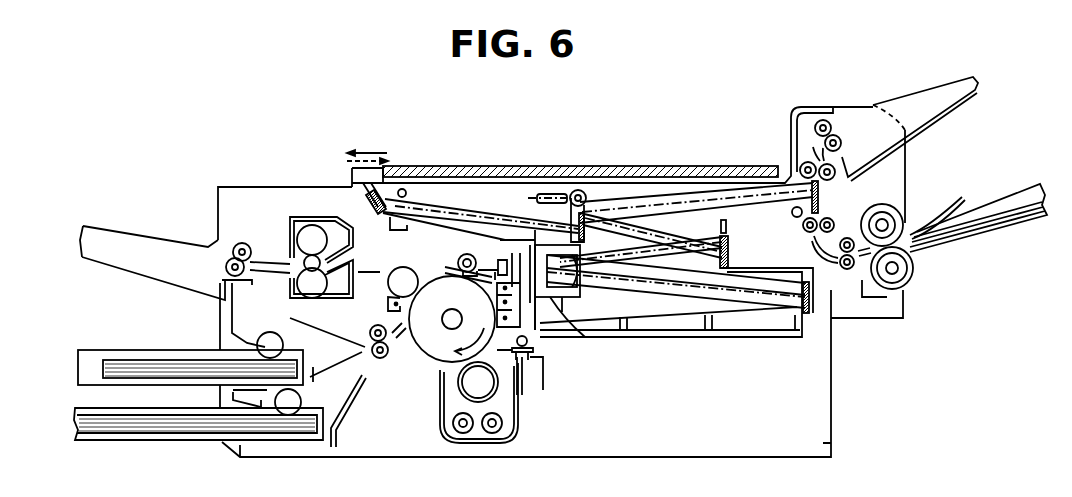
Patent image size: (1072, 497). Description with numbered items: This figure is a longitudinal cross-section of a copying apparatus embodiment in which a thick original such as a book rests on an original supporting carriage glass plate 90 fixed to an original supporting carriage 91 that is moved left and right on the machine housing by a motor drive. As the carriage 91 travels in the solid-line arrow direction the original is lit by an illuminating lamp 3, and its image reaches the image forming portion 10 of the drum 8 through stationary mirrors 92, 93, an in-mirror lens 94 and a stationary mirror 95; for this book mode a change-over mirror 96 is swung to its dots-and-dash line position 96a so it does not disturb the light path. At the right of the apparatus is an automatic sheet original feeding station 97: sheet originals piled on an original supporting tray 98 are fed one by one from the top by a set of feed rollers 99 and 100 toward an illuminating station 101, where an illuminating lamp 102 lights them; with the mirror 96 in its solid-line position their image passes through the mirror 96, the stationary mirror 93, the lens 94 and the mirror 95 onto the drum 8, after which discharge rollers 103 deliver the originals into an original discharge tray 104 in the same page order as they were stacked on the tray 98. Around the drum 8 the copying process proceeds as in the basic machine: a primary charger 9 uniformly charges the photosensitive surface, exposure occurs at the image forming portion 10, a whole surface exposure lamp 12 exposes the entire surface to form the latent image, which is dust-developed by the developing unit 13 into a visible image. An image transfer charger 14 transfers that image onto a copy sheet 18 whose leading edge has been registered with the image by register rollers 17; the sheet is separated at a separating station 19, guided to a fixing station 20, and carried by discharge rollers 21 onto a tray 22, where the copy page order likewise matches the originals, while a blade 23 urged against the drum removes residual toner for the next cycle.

The illuminating lamp 3 is at (408, 193).
The drum 8 is at (424, 352).
The primary charger 9 is at (513, 285).
The image forming portion 10 is at (520, 353).
The whole surface exposure lamp 12 is at (538, 345).
The developing unit 13 is at (502, 388).
The image transfer charger 14 is at (384, 306).
The register rollers 17 is at (385, 360).
The copy sheet 18 is at (140, 362).
The separating station 19 is at (417, 267).
The fixing station 20 is at (305, 215).
The discharge rollers 21 is at (243, 243).
The tray 22 is at (127, 268).
The blade 23 is at (459, 256).
The original supporting carriage glass plate 90 is at (598, 165).
The original supporting carriage 91 is at (750, 165).
The stationary mirror 92 is at (365, 192).
The stationary mirror 93 is at (732, 248).
The in-mirror lens 94 is at (574, 303).
The stationary mirror 95 is at (797, 308).
The change-over mirror 96 is at (587, 218).
The dots-and-dash line position 96a is at (550, 192).
The automatic sheet original feeding station 97 is at (922, 272).
The original supporting tray 98 is at (1028, 222).
The feed roller 99 is at (883, 204).
The feed roller 100 is at (906, 285).
The illuminating station 101 is at (797, 182).
The illuminating lamp 102 is at (793, 213).
The discharge rollers 103 is at (822, 120).
The original discharge tray 104 is at (940, 105).